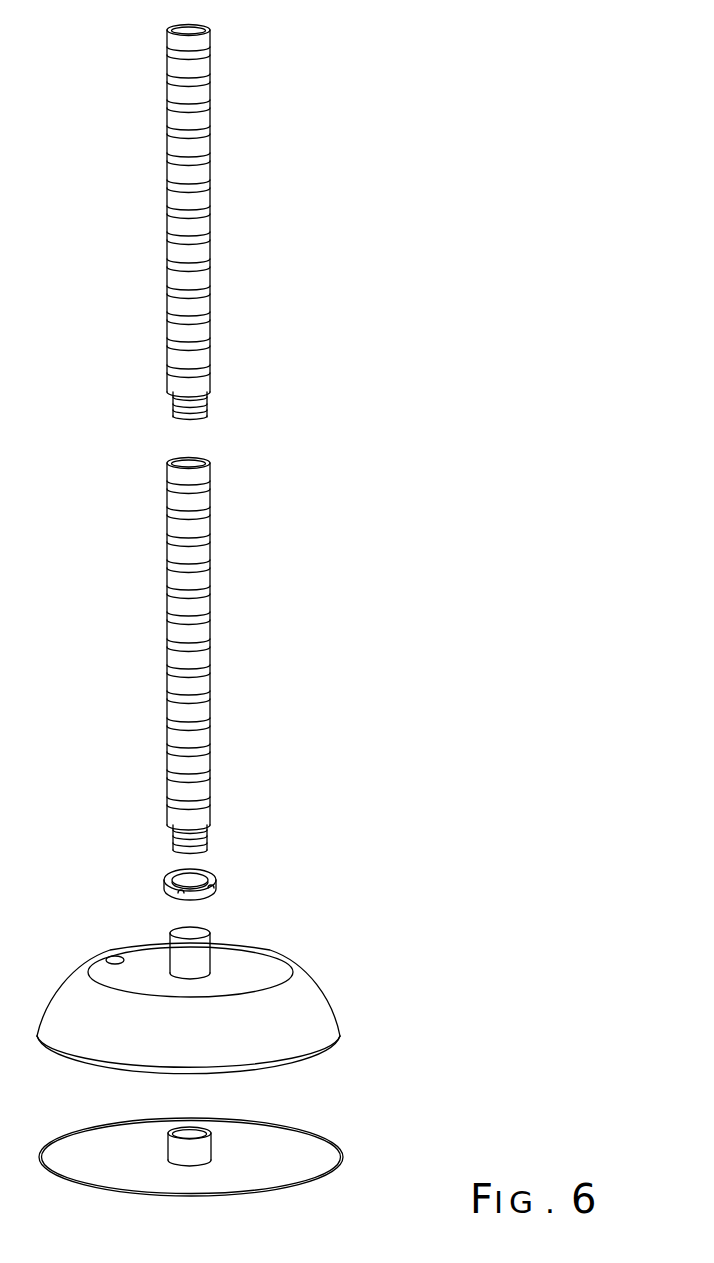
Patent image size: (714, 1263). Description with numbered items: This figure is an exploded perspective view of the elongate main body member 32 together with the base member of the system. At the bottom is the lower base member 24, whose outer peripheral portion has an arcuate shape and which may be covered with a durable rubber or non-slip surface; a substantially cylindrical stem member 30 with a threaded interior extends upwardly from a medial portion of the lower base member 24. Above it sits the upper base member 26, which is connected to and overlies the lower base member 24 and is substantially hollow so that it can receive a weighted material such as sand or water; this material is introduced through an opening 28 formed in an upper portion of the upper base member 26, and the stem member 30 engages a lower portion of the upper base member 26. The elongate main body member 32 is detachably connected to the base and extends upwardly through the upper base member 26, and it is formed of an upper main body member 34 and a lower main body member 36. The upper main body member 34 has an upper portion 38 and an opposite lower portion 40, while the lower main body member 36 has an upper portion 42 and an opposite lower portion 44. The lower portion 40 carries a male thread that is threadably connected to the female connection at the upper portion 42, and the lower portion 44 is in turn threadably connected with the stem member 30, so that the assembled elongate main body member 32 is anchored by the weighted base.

The lower base member 24 is at (340, 1140).
The upper base member 26 is at (326, 986).
The opening 28 is at (108, 955).
The stem member 30 is at (212, 1143).
The elongate main body member 32 is at (266, 431).
The upper main body member 34 is at (215, 214).
The lower main body member 36 is at (214, 679).
The upper portion 38 is at (208, 27).
The lower portion 40 is at (208, 397).
The upper portion 42 is at (172, 461).
The lower portion 44 is at (208, 838).